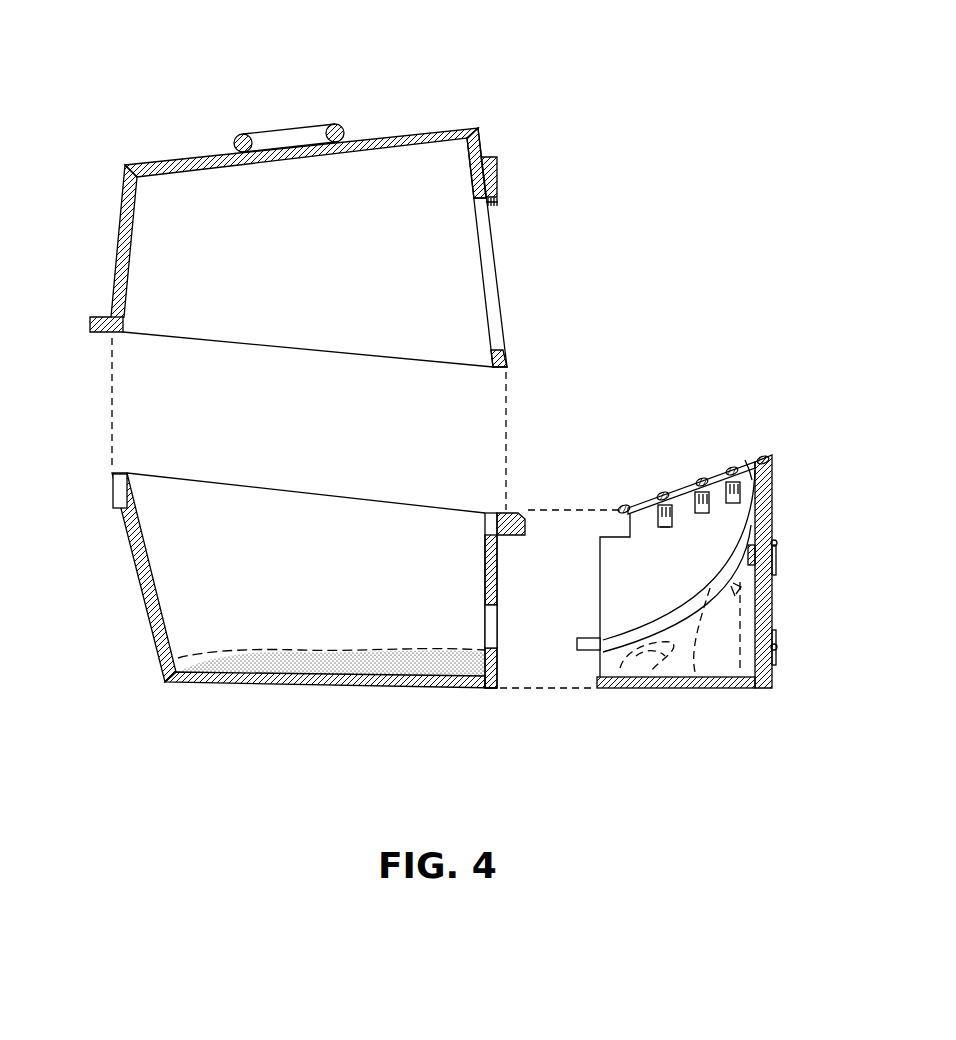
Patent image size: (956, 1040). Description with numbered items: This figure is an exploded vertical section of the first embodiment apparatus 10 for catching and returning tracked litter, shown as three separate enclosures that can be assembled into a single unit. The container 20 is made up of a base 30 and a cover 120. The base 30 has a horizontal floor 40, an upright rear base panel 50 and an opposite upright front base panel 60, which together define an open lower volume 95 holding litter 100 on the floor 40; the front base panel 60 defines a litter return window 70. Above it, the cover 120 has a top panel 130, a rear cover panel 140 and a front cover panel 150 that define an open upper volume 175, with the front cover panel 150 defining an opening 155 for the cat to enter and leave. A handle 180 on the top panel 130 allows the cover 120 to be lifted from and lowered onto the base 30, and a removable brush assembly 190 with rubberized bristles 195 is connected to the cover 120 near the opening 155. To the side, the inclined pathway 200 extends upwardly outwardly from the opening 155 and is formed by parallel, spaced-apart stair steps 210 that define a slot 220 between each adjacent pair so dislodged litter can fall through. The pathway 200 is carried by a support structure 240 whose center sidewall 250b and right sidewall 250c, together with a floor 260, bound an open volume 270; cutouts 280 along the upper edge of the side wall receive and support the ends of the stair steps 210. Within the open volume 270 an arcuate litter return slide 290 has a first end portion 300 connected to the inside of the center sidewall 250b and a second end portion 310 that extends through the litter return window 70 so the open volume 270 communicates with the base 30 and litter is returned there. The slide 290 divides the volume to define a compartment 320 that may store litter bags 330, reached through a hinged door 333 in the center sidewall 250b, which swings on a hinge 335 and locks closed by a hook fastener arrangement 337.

The first embodiment apparatus 10 is at (196, 74).
The container 20 is at (317, 226).
The base 30 is at (308, 604).
The floor 40 is at (186, 682).
The rear base panel 50 is at (128, 540).
The front base panel 60 is at (497, 561).
The litter return window 70 is at (492, 622).
The open lower volume 95 is at (306, 523).
The litter 100 is at (237, 668).
The cover 120 is at (118, 246).
The top panel 130 is at (185, 158).
The rear cover panel 140 is at (114, 284).
The front cover panel 150 is at (483, 128).
The opening 155 is at (485, 212).
The open upper volume 175 is at (308, 302).
The handle 180 is at (308, 127).
The brush assembly 190 is at (500, 165).
The rubberized bristles 195 is at (498, 198).
The pathway 200 is at (692, 567).
The stair steps 210 is at (702, 513).
The slot 220 is at (682, 503).
The support structure 240 is at (735, 690).
The center sidewall 250b is at (770, 671).
The right sidewall 250c is at (628, 505).
The floor 260 is at (652, 684).
The open volume 270 is at (638, 595).
The cutouts 280 is at (662, 527).
The litter return slide 290 is at (760, 510).
The first end portion 300 is at (757, 490).
The second end portion 310 is at (585, 640).
The compartment 320 is at (610, 685).
The litter bags 330 is at (708, 666).
The hinged door 333 is at (757, 596).
The hinge 335 is at (777, 640).
The hook fastener arrangement 337 is at (777, 548).